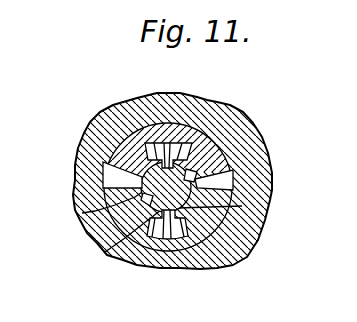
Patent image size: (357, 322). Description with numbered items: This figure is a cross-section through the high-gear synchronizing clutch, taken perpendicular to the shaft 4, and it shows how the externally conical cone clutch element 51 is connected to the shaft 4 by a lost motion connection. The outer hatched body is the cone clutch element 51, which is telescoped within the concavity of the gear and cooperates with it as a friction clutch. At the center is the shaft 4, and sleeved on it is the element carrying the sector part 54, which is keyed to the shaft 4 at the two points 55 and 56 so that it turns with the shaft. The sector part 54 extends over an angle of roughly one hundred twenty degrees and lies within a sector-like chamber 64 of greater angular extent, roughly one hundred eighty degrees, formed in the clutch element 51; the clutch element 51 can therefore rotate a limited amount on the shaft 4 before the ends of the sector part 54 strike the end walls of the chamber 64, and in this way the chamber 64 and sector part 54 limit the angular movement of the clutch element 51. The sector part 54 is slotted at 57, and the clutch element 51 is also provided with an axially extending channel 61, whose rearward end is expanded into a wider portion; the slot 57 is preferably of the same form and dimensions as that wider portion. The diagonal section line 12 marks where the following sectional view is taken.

The shaft 4 is at (200, 183).
The section line 12- 12 is at (82, 145).
The cone clutch element 51 is at (245, 202).
The sector part 54 is at (225, 165).
The key 55 is at (82, 213).
The key 56 is at (213, 218).
The slot 57 is at (183, 140).
The channel 61 is at (148, 260).
The sector-like chamber 64 is at (115, 177).